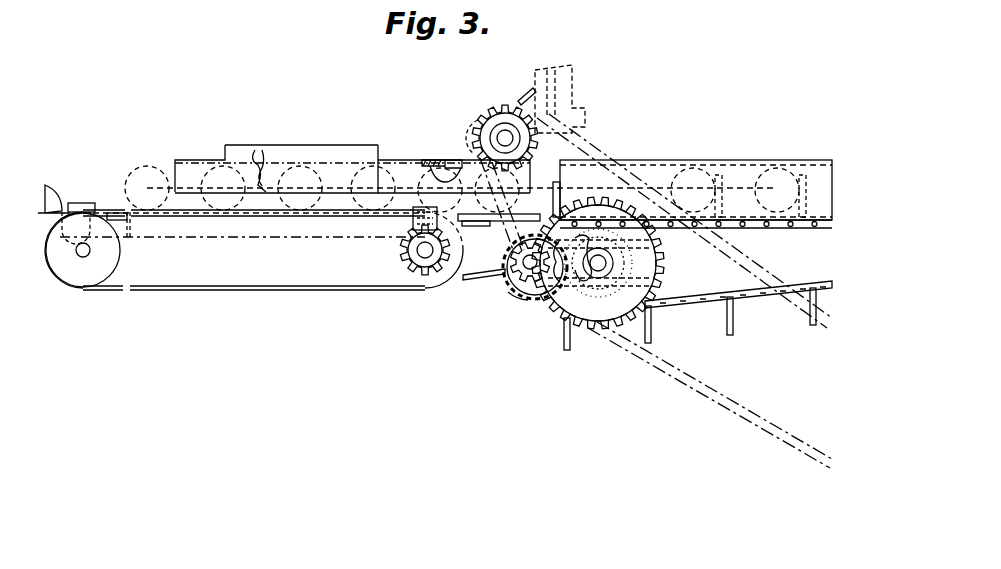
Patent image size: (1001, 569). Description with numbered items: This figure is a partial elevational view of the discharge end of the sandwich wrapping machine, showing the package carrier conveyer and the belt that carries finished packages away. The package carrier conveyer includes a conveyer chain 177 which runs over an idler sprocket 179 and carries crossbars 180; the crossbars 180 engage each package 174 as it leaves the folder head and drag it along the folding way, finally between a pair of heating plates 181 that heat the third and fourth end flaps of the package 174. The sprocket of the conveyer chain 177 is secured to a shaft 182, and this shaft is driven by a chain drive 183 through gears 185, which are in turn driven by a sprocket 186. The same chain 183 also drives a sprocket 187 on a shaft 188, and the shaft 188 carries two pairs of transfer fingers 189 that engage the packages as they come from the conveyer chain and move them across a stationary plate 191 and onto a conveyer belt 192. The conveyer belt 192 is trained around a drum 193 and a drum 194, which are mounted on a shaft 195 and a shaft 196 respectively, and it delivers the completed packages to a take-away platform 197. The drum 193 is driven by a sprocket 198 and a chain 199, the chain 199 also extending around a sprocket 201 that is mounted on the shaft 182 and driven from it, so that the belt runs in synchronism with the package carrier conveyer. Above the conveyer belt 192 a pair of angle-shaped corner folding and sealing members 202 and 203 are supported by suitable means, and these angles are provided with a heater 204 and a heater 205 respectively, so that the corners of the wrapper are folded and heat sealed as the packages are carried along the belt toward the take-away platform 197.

The package 174 is at (150, 168).
The conveyer chain 177 is at (773, 232).
The idler sprocket 179 is at (519, 302).
The crossbars 180 is at (753, 160).
The heating plates 181 is at (664, 176).
The shaft 182 is at (522, 305).
The chain drive 183 is at (790, 307).
The gears 185 is at (618, 255).
The sprocket 186 is at (661, 272).
The sprocket 187 is at (494, 119).
The shaft 188 is at (497, 139).
The transfer fingers 189 is at (530, 93).
The stationary plate 191 is at (478, 228).
The conveyer belt 192 is at (258, 290).
The drum 193 is at (397, 246).
The drum 194 is at (104, 262).
The shaft 195 is at (420, 254).
The shaft 196 is at (82, 254).
The take-away platform 197 is at (58, 189).
The sprocket 198 is at (417, 284).
The chain 199 is at (482, 282).
The sprocket 201 is at (513, 290).
The corner folding and sealing member 202 is at (192, 160).
The corner folding and sealing member 203 is at (263, 173).
The heater 204 is at (245, 148).
The heater 205 is at (348, 152).